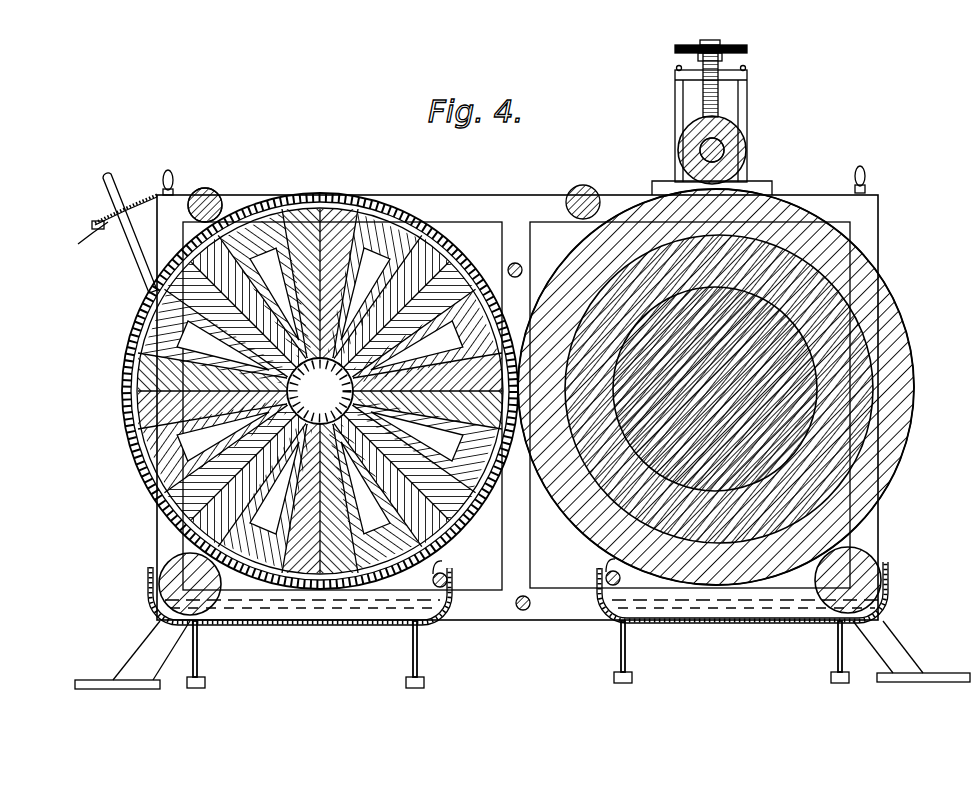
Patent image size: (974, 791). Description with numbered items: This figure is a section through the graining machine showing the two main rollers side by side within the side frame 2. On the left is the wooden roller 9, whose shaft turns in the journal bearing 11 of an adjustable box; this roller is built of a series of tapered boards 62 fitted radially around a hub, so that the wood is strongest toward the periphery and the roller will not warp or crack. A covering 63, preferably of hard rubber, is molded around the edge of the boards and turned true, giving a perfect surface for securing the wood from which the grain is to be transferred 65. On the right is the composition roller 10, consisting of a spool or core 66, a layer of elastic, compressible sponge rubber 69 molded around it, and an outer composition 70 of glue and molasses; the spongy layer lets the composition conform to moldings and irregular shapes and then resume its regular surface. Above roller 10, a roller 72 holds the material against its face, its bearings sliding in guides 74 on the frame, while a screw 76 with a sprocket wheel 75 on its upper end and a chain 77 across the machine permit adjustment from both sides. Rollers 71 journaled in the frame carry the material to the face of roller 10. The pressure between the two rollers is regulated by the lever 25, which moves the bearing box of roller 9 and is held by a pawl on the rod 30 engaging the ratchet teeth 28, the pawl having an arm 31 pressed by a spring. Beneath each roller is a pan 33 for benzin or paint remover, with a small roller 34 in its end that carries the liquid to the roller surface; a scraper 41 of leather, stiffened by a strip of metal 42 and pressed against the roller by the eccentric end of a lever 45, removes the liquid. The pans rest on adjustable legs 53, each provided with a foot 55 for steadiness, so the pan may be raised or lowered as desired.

The side frame 2 is at (515, 206).
The roller 9 is at (418, 226).
The roller 10 is at (898, 378).
The journal bearing 11 is at (216, 198).
The lever 25 is at (130, 233).
The teeth 28 is at (108, 212).
The rod 30 is at (82, 237).
The arm 31 is at (760, 612).
The pan 33 is at (306, 610).
The small roller 34 is at (168, 570).
The scraper 41 is at (520, 267).
The strip of metal 42 is at (447, 580).
The lever 45 is at (174, 181).
The leg 53 is at (198, 650).
The foot 55 is at (206, 682).
The boards 62 is at (487, 515).
The covering 63 is at (136, 366).
The wood from which the grain is to be transferred 65 is at (142, 323).
The spool or core 66 is at (775, 341).
The sponge rubber 69 is at (800, 288).
The composition 70 is at (823, 228).
The rollers 71 is at (589, 198).
The roller 72 is at (736, 146).
The guides 74 is at (740, 106).
The sprocket wheel 75 is at (719, 37).
The screw 76 is at (719, 90).
The chain 77 is at (748, 50).